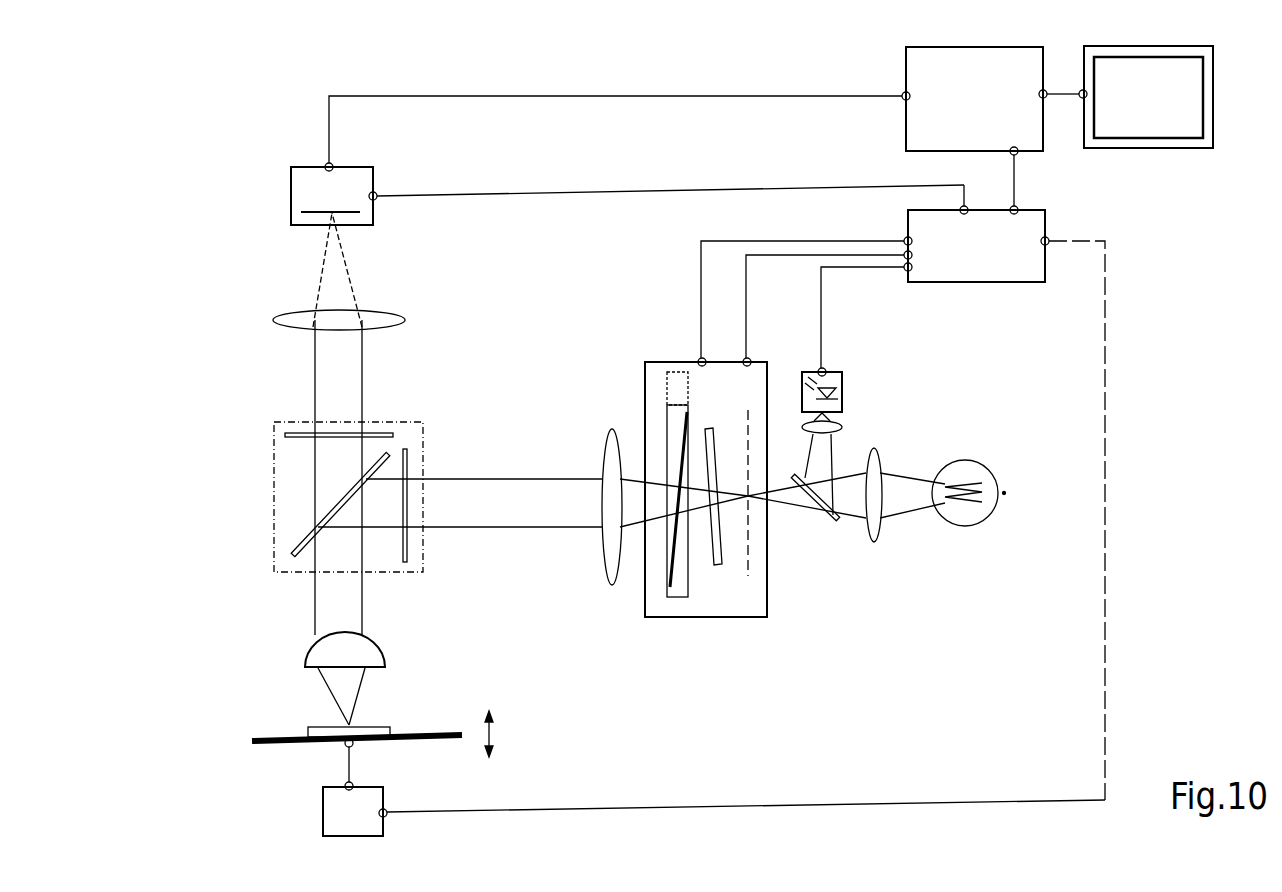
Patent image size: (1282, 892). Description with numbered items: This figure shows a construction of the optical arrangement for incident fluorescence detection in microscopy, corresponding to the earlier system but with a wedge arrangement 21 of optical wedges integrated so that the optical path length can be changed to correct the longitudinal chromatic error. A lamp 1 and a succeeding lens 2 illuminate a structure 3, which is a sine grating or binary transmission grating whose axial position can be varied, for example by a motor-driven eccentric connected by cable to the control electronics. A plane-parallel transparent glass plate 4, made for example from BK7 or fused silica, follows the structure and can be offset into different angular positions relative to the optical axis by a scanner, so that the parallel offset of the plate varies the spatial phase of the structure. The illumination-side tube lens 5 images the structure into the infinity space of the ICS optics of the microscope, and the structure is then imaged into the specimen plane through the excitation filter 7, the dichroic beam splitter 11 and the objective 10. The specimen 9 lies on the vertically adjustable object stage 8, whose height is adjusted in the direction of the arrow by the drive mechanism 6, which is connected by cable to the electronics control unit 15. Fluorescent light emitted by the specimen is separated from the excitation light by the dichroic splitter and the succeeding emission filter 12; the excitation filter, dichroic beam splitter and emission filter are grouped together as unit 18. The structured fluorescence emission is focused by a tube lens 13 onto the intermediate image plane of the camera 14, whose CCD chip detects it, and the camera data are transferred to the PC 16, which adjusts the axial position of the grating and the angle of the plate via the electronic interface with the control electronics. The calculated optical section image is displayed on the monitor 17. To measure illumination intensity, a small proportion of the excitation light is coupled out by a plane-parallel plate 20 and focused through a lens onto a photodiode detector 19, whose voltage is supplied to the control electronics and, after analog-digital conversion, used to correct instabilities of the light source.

The lamp 1 is at (972, 527).
The lens 2 is at (876, 543).
The structure 3 is at (752, 572).
The plane-parallel transparent glass plate 4 is at (718, 566).
The tube lens 5 is at (612, 585).
The drive mechanism 6 is at (323, 813).
The excitation filter 7 is at (407, 563).
The object stage 8 is at (283, 738).
The specimen 9 is at (385, 727).
The objective 10 is at (305, 658).
The dichroic beam splitter 11 is at (293, 555).
The emission filter 12 is at (285, 436).
The tube lens 13 is at (275, 320).
The camera 14 is at (290, 212).
The electronics control unit 15 is at (978, 285).
The PC 16 is at (1048, 148).
The monitor 17 is at (1176, 148).
The filter group 18 is at (426, 537).
The photodetector 19 is at (842, 392).
The plane-parallel plate 20 is at (833, 523).
The wedge arrangement 21 is at (676, 598).